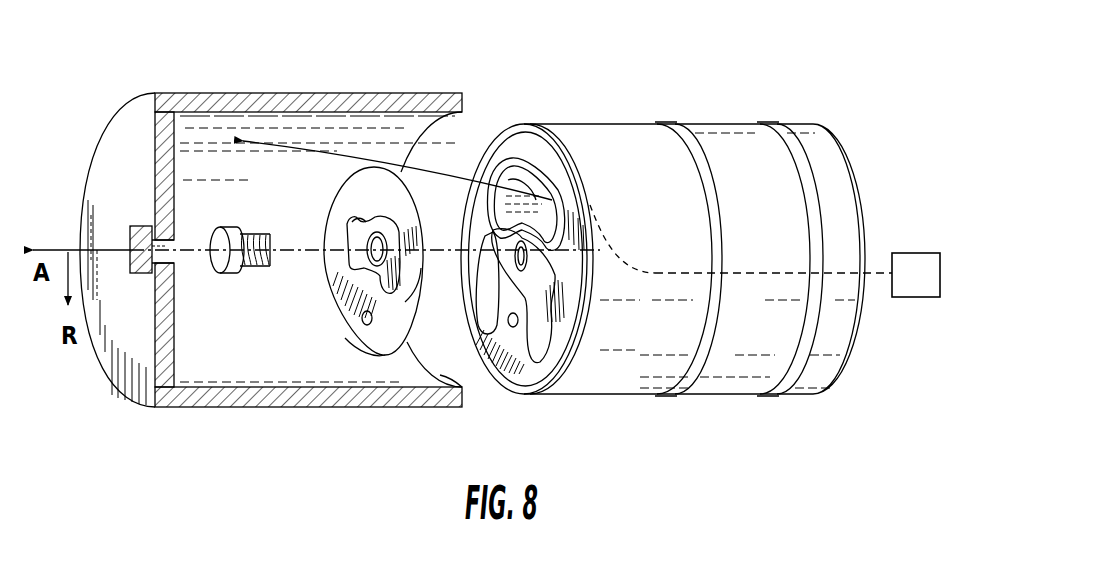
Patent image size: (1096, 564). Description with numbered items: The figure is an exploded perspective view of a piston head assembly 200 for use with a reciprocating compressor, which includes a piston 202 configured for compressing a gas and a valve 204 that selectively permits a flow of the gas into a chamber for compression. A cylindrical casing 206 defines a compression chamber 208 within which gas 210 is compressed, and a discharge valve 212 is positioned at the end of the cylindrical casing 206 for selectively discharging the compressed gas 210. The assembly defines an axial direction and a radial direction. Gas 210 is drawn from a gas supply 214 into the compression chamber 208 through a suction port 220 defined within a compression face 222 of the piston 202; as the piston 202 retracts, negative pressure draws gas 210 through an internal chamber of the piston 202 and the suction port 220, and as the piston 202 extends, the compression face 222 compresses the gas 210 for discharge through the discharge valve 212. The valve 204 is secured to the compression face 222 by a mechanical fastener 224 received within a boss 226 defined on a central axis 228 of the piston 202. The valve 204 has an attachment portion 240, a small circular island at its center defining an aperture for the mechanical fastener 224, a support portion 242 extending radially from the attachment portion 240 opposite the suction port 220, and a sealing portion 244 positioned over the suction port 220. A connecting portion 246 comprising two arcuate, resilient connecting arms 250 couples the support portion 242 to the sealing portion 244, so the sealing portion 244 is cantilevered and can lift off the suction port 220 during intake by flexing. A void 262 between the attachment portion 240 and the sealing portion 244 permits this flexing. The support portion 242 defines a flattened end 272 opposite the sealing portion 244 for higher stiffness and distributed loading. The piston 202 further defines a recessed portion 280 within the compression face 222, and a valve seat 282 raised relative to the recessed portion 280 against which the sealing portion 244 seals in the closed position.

The piston head assembly 200 is at (786, 48).
The piston 202 is at (653, 160).
The valve 204 is at (393, 328).
The cylindrical casing 206 is at (300, 92).
The compression chamber 208 is at (203, 138).
The gas 210 is at (460, 172).
The discharge valve 212 is at (148, 232).
The gas supply 214 is at (797, 275).
The suction port 220 is at (534, 186).
The compression face 222 is at (530, 152).
The mechanical fastener 224 is at (223, 270).
The boss 226 is at (532, 270).
The central axis 228 is at (186, 247).
The attachment portion 240 is at (362, 278).
The support portion 242 is at (350, 320).
The sealing portion 244 is at (376, 193).
The connecting portion 246 is at (337, 224).
The connecting arms 250 is at (416, 286).
The void 262 is at (405, 262).
The flattened end 272 is at (364, 358).
The recessed portion 280 is at (540, 330).
The valve seat 282 is at (556, 184).